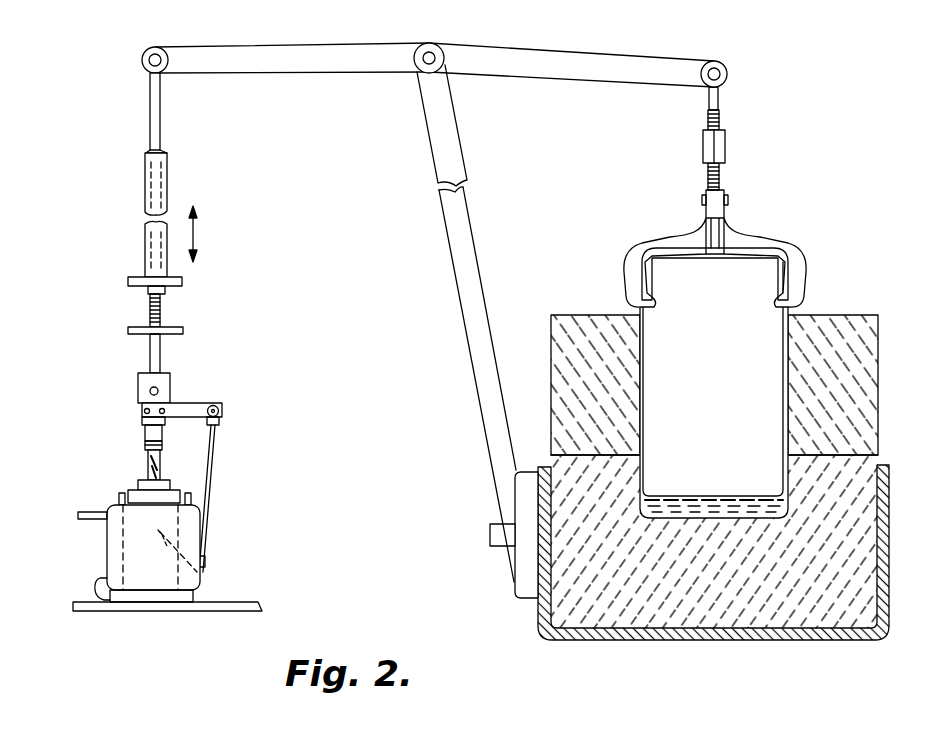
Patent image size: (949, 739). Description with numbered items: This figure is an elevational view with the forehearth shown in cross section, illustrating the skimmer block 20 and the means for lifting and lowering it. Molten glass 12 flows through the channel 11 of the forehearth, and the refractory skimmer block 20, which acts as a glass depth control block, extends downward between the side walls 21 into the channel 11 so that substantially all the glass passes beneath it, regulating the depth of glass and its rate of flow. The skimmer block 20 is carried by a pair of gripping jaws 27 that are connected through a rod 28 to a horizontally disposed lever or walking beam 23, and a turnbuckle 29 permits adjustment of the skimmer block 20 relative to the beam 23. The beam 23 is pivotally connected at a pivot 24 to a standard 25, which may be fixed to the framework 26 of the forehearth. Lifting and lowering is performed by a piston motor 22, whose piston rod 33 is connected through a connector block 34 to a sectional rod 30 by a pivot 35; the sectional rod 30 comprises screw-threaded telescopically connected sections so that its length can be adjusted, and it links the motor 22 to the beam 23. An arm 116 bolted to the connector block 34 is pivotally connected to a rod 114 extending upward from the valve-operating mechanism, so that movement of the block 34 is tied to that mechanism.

The channel 11 is at (785, 462).
The molten glass 12 is at (730, 503).
The skimmer block 20 is at (738, 388).
The side walls 21 is at (878, 390).
The piston motor 22 is at (130, 540).
The lever or walking beam 23 is at (345, 70).
The pivot 24 is at (435, 54).
The standard 25 is at (437, 152).
The framework 26 is at (536, 600).
The gripping jaws 27 is at (752, 244).
The rod 28 is at (720, 104).
The turnbuckle 29 is at (727, 147).
The sectional rod 30 is at (152, 128).
The piston rod 33 is at (148, 458).
The connector block 34 is at (150, 401).
The pivot 35 is at (149, 391).
The rod 114 is at (208, 464).
The arm 116 is at (216, 388).